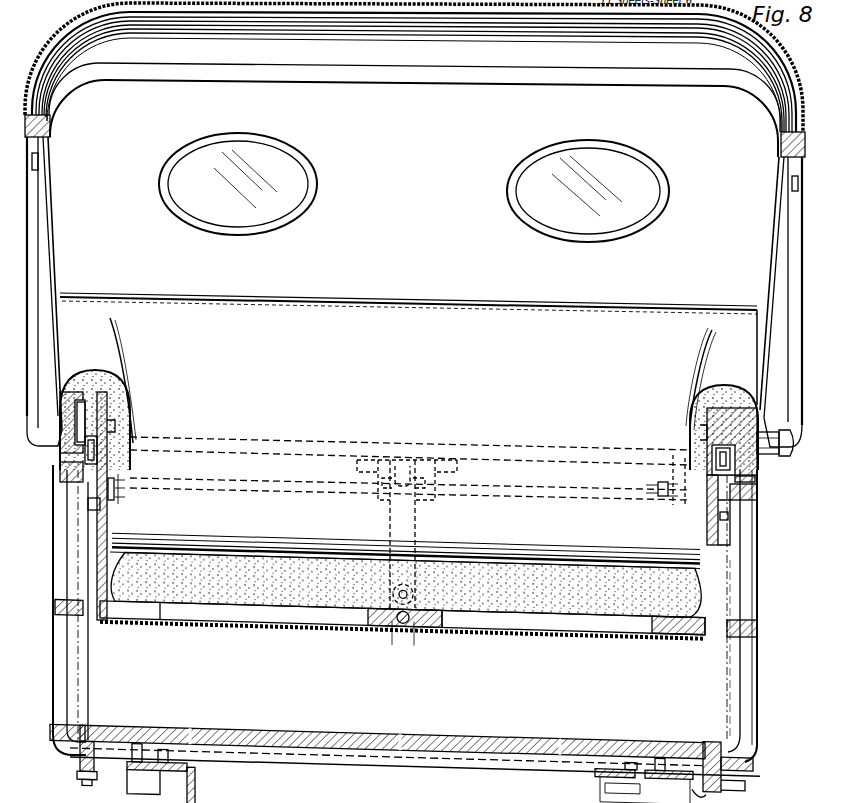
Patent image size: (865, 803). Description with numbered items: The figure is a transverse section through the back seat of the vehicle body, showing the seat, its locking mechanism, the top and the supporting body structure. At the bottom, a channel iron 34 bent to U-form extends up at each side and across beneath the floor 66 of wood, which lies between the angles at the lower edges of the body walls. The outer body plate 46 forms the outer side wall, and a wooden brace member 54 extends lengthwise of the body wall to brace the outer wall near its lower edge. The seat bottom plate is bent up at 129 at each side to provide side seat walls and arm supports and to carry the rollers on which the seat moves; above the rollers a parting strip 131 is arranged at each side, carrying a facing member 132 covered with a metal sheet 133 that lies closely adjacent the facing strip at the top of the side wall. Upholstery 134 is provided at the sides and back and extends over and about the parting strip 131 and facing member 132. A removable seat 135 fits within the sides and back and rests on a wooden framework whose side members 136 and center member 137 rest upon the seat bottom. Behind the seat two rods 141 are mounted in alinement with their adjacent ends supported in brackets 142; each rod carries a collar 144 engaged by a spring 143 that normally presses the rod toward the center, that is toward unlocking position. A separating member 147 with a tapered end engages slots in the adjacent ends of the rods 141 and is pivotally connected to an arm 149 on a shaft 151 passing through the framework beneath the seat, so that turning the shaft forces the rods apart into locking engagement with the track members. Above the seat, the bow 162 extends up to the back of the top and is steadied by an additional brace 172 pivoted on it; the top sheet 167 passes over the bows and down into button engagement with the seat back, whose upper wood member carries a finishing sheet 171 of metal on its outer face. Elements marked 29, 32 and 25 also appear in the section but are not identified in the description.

The top sheet 167 is at (362, 4).
The finishing sheet 171 is at (414, 253).
The additional brace 172 is at (51, 126).
The bow 162 is at (40, 258).
The upholstery 134 is at (712, 406).
The parting strip 131 is at (759, 408).
The spring 143 is at (683, 448).
The collar 144 is at (662, 490).
The rod 141 is at (524, 487).
The bracket 142 is at (444, 455).
The separating member 147 is at (430, 521).
The facing member 132 is at (752, 460).
The metal sheet 133 is at (756, 486).
The bent-up side portion of seat bottom plate 129 is at (750, 556).
The seat frame side 29 is at (100, 566).
The outer body plate 46 is at (758, 585).
The removable seat 135 is at (580, 604).
The side member 136 is at (134, 624).
The center member 137 is at (432, 632).
The shaft 151 is at (402, 636).
The arm 149 is at (420, 597).
The floor 66 is at (371, 738).
The brace member 54 is at (754, 752).
The mounting bracket 32 is at (192, 797).
The base 25 is at (711, 794).
The channel iron 34 is at (740, 694).